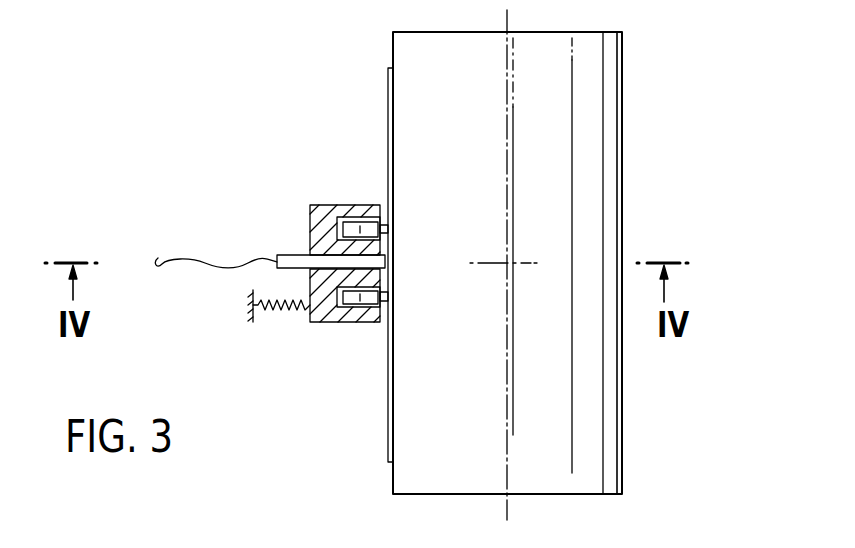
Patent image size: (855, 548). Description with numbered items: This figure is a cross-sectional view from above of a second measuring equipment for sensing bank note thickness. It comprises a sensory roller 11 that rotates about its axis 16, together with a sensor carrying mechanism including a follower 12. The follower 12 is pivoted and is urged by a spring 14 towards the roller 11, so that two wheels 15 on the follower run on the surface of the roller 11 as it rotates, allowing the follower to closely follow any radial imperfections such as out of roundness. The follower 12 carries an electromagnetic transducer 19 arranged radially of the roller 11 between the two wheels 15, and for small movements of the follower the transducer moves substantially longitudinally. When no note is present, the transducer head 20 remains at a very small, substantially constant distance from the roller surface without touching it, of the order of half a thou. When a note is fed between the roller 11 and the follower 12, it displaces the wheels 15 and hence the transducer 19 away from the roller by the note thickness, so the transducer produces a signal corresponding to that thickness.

The sensory roller 11 is at (400, 113).
The follower 12 is at (308, 222).
The spring 14 is at (275, 312).
The wheels 15 is at (386, 227).
The axis 16 is at (507, 499).
The electromagnetic transducer 19 is at (283, 256).
The transducer head 20 is at (382, 262).